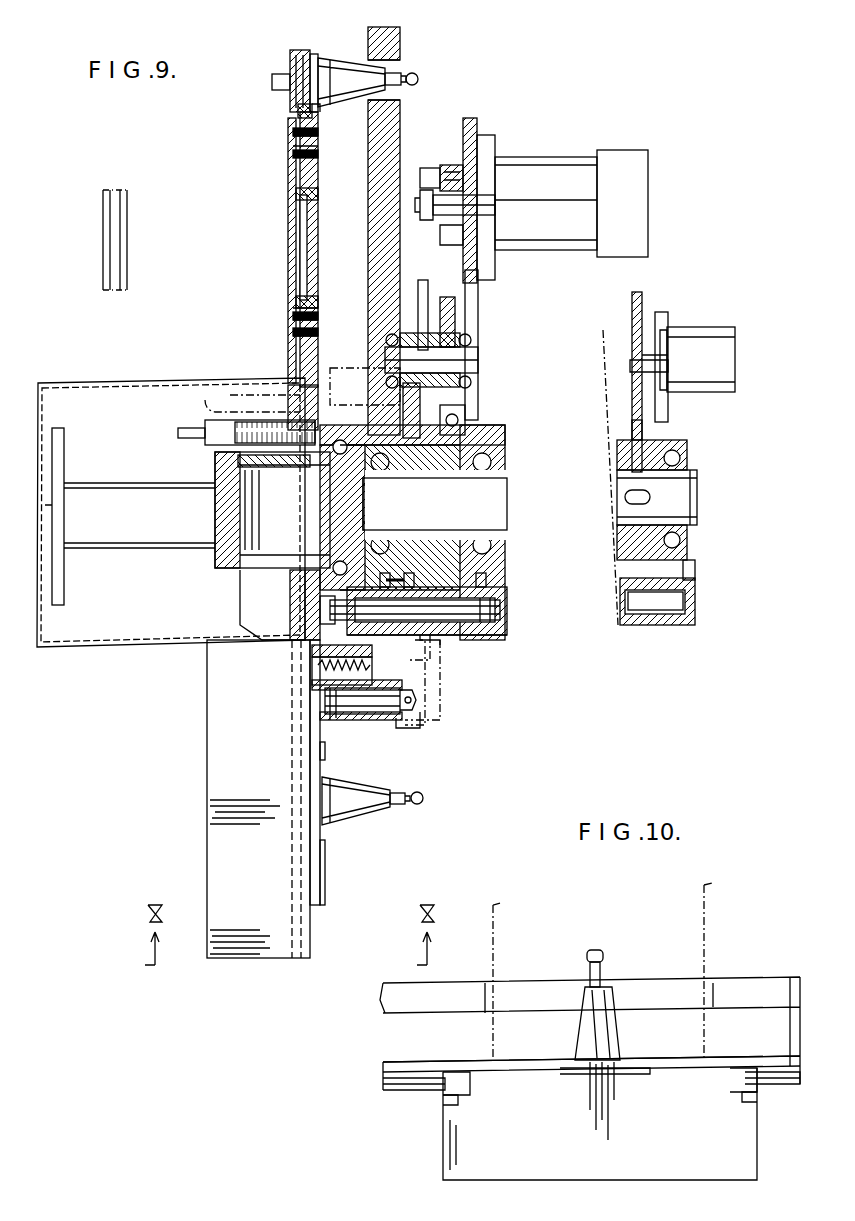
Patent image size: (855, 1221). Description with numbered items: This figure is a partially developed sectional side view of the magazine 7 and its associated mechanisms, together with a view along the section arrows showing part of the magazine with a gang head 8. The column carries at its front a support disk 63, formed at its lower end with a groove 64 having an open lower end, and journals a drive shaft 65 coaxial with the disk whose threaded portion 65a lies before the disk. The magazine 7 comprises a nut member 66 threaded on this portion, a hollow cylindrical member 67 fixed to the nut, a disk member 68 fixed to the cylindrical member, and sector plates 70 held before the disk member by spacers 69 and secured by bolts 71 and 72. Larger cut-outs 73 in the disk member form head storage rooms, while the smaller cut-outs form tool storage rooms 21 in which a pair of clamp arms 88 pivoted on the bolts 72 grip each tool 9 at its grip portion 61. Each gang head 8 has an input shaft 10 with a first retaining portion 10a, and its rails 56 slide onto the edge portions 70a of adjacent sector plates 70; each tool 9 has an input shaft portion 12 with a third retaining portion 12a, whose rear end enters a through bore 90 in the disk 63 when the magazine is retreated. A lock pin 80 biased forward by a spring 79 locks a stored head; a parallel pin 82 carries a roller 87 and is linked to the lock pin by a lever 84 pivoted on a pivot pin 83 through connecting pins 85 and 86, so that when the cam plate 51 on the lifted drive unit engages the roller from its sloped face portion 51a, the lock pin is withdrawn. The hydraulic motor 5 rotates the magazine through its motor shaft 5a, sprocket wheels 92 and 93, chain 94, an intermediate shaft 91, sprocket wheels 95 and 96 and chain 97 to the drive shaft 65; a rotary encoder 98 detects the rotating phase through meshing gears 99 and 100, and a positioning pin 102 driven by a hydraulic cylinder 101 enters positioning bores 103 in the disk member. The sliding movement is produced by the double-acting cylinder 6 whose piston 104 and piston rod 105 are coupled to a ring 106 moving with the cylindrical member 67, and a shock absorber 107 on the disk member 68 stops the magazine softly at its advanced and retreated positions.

In FIG. 9, the first magazine-driving means or motor 5 is at (532, 185).
In FIG. 9, the motor shaft 5a is at (468, 200).
In FIG. 9, the second magazine-driving means or cylinder 6 is at (457, 651).
In FIG. 9, the magazine 7 is at (147, 258).
In FIG. 9, the gang head 8 is at (280, 937).
In FIG. 10, the gang head 8 is at (530, 1160).
In FIG. 9, the tool 9 is at (328, 48).
In FIG. 9, the input shaft 10 is at (360, 800).
In FIG. 10, the input shaft 10 is at (612, 1012).
In FIG. 9, the first retaining portion 10a is at (424, 800).
In FIG. 10, the first retaining portion 10a is at (605, 960).
In FIG. 9, the input shaft portion 12 is at (345, 72).
In FIG. 9, the third retaining portion 12a is at (418, 79).
In FIG. 9, the tool storage room 21 is at (329, 115).
In FIG. 9, the cam plate 51 is at (452, 665).
In FIG. 9, the sloped face portion 51a is at (470, 628).
In FIG. 10, the rail 56 is at (460, 1098).
In FIG. 9, the grip portion 61 is at (297, 72).
In FIG. 9, the support disk 63 is at (385, 158).
In FIG. 10, the support disk 63 is at (745, 985).
In FIG. 10, the cut-out or groove 64 is at (497, 1000).
In FIG. 9, the drive shaft 65 is at (468, 496).
In FIG. 9, the threaded portion 65a is at (185, 522).
In FIG. 9, the nut member 66 is at (248, 570).
In FIG. 9, the hollow cylindrical member 67 is at (262, 598).
In FIG. 9, the disk member 68 is at (310, 237).
In FIG. 10, the disk member 68 is at (780, 1060).
In FIG. 9, the spacer 69 is at (305, 200).
In FIG. 9, the sector plate 70 is at (290, 262).
In FIG. 10, the sector plate 70 is at (410, 1092).
In FIG. 10, the edge portion 70a is at (450, 1085).
In FIG. 9, the fastener or bolt 71 is at (312, 326).
In FIG. 9, the fastener or bolt 72 is at (290, 156).
In FIG. 10, the larger cut-out 73 is at (715, 1070).
In FIG. 9, the spring 79 is at (372, 664).
In FIG. 9, the lock pin 80 is at (325, 690).
In FIG. 9, the pin 82 is at (402, 708).
In FIG. 9, the pivot pin 83 is at (362, 702).
In FIG. 9, the lever 84 is at (310, 735).
In FIG. 9, the connecting pin 85 is at (305, 562).
In FIG. 9, the connecting pin 86 is at (340, 718).
In FIG. 9, the roller 87 is at (410, 722).
In FIG. 9, the clamp arm 88 is at (300, 110).
In FIG. 9, the through bore 90 is at (400, 62).
In FIG. 9, the intermediate shaft 91 is at (480, 355).
In FIG. 9, the sprocket wheel 92 is at (488, 268).
In FIG. 9, the sprocket wheel 93 is at (455, 302).
In FIG. 9, the chain 94 is at (470, 437).
In FIG. 9, the sprocket wheel 95 is at (470, 380).
In FIG. 9, the sprocket wheel 96 is at (455, 422).
In FIG. 9, the chain 97 is at (472, 582).
In FIG. 9, the rotary encoder 98 is at (715, 360).
In FIG. 9, the gear 99 is at (642, 296).
In FIG. 9, the gear 100 is at (440, 548).
In FIG. 9, the hydraulic cylinder 101 is at (328, 375).
In FIG. 9, the positioning pin 102 is at (230, 400).
In FIG. 9, the positioning bore 103 is at (302, 458).
In FIG. 9, the piston 104 is at (505, 607).
In FIG. 9, the piston rod 105 is at (465, 632).
In FIG. 9, the ring 106 is at (410, 610).
In FIG. 9, the shock absorber 107 is at (215, 437).